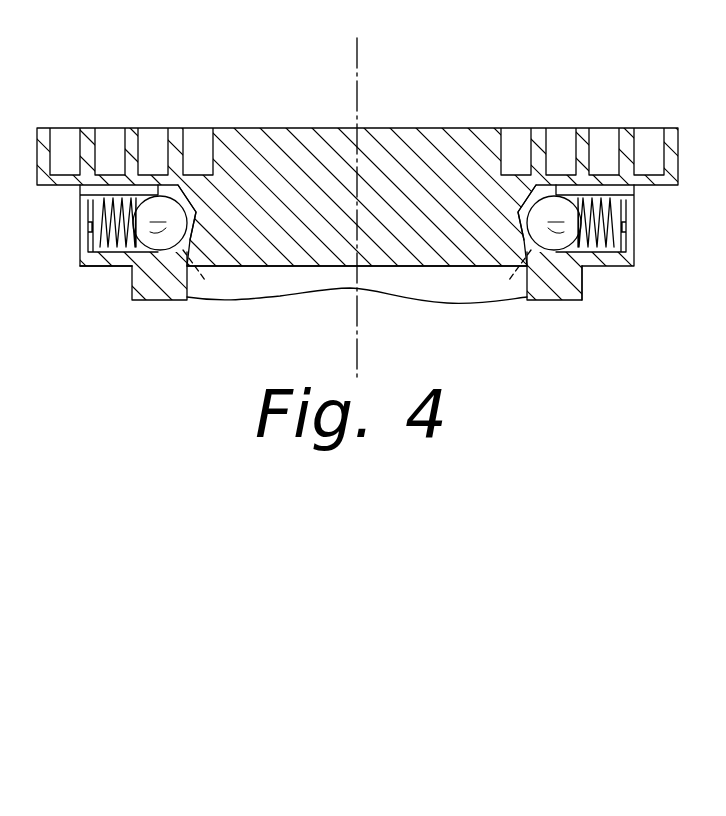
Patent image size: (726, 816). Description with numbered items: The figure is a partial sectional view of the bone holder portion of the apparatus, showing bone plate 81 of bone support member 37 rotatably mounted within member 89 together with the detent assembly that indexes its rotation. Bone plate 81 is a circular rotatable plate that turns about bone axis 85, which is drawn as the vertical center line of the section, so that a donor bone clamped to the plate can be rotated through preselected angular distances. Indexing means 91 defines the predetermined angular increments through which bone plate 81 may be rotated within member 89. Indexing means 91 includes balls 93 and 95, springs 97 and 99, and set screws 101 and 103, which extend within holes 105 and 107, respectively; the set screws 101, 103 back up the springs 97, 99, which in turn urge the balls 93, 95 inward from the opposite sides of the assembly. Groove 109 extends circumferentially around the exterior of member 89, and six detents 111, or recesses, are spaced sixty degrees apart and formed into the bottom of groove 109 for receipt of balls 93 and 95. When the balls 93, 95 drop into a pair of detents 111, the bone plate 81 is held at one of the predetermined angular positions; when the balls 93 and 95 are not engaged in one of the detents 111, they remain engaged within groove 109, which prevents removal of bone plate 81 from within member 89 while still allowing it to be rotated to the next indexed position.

The bone support member 37 is at (578, 292).
The bone plate 81 is at (91, 134).
The bone axis 85 is at (357, 55).
The member 89 is at (180, 300).
The indexing means 91 is at (128, 268).
The ball 93 is at (157, 228).
The ball 95 is at (560, 228).
The spring 97 is at (122, 203).
The spring 99 is at (593, 203).
The set screw 101 is at (85, 205).
The set screw 103 is at (630, 203).
The hole 105 is at (107, 243).
The hole 107 is at (600, 267).
The groove 109 is at (180, 203).
The detents 111 is at (357, 273).